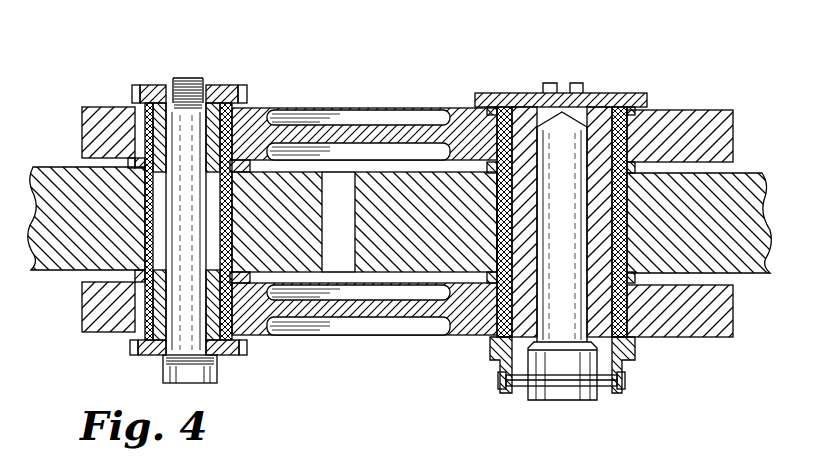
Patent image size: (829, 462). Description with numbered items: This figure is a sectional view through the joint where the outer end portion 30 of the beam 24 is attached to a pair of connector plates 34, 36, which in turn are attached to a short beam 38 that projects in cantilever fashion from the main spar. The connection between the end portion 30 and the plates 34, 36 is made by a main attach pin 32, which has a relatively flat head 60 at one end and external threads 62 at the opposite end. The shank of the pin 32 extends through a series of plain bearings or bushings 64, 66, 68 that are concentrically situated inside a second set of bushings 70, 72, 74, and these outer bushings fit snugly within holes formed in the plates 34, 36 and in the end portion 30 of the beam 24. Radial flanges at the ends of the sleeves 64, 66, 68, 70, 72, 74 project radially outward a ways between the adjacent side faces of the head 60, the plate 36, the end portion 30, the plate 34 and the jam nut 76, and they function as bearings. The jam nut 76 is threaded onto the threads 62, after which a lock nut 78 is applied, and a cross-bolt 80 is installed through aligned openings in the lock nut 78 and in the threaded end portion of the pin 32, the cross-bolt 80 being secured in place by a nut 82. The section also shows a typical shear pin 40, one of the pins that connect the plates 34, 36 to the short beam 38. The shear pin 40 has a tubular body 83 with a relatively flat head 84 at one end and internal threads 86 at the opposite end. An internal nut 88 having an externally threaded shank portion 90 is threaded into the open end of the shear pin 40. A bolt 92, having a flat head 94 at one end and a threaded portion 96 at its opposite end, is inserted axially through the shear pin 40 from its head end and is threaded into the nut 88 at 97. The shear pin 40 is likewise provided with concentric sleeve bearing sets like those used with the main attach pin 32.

The beam 24 is at (758, 273).
The outer end portion of beam 30 is at (397, 262).
The main attach pin 32 is at (597, 102).
The connector plate 34 is at (310, 308).
The connector plate 36 is at (358, 127).
The short beam 38 is at (53, 248).
The shear pin 40 is at (150, 362).
The head 60 is at (475, 93).
The external threads 62 is at (612, 393).
The plain bearing 64 is at (620, 127).
The plain bearing 66 is at (625, 150).
The plain bearing 68 is at (633, 333).
The bushing 70 is at (495, 132).
The bushing 72 is at (497, 215).
The bushing 74 is at (496, 338).
The jam nut 76 is at (493, 352).
The lock nut 78 is at (503, 390).
The cross-bolt 80 is at (566, 386).
The nut 82 is at (493, 380).
The tubular body 83 is at (247, 112).
The head 84 is at (230, 347).
The internal threads 86 is at (167, 108).
The internal nut 88 is at (173, 102).
The externally threaded shank portion 90 is at (238, 93).
The bolt 92 is at (187, 308).
The flat head 94 is at (163, 360).
The threaded portion 96 is at (188, 78).
The threaded connection 97 is at (203, 100).